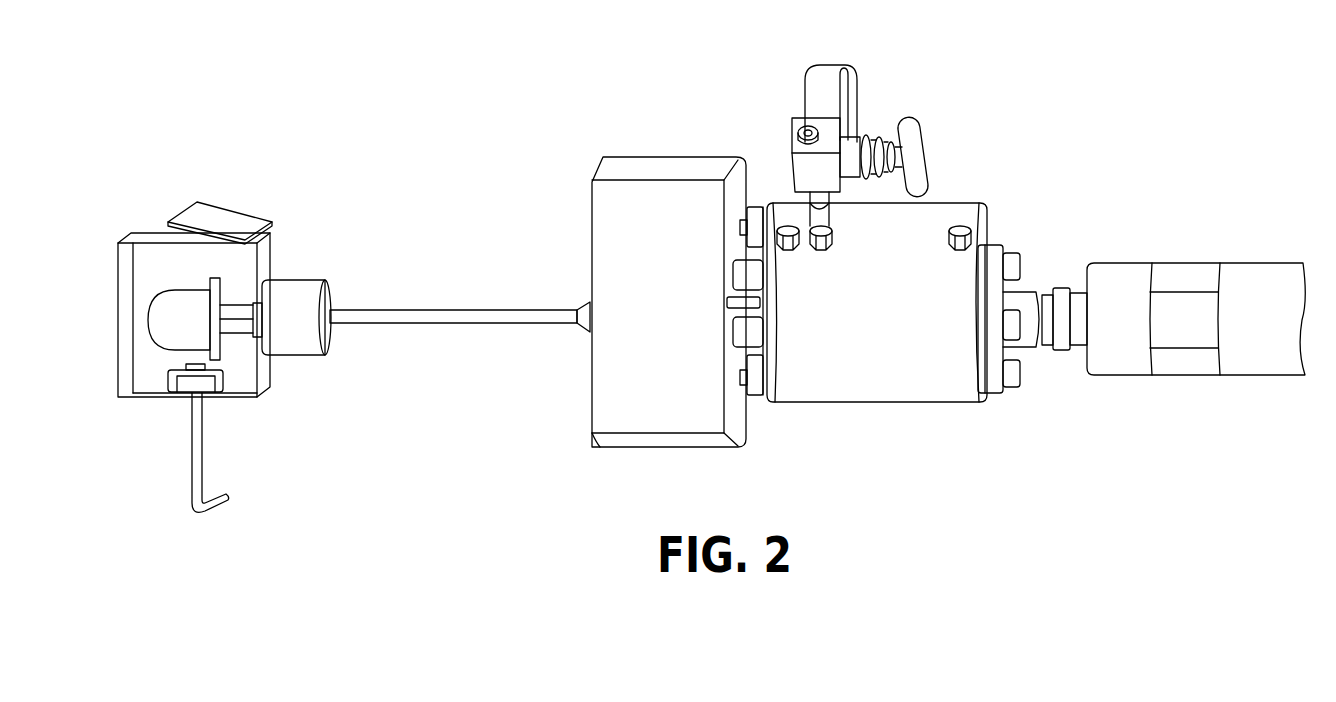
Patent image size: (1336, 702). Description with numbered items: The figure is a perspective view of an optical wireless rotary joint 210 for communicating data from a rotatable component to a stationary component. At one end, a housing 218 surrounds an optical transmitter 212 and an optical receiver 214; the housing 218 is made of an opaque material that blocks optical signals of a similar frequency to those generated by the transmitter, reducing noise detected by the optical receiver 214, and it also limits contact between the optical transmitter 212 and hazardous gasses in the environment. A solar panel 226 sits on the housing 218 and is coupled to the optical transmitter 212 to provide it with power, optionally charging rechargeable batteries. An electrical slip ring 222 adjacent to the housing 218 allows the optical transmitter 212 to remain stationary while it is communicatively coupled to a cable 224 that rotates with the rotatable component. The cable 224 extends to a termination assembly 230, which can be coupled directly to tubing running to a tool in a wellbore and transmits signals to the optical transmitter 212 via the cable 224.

The optical wireless rotary joint 210 is at (103, 119).
The optical transmitter 212 is at (148, 310).
The optical receiver 214 is at (162, 390).
The housing 218 is at (137, 233).
The electrical slip ring 222 is at (320, 278).
The cable 224 is at (465, 325).
The solar panel 226 is at (218, 223).
The termination assembly 230 is at (868, 405).